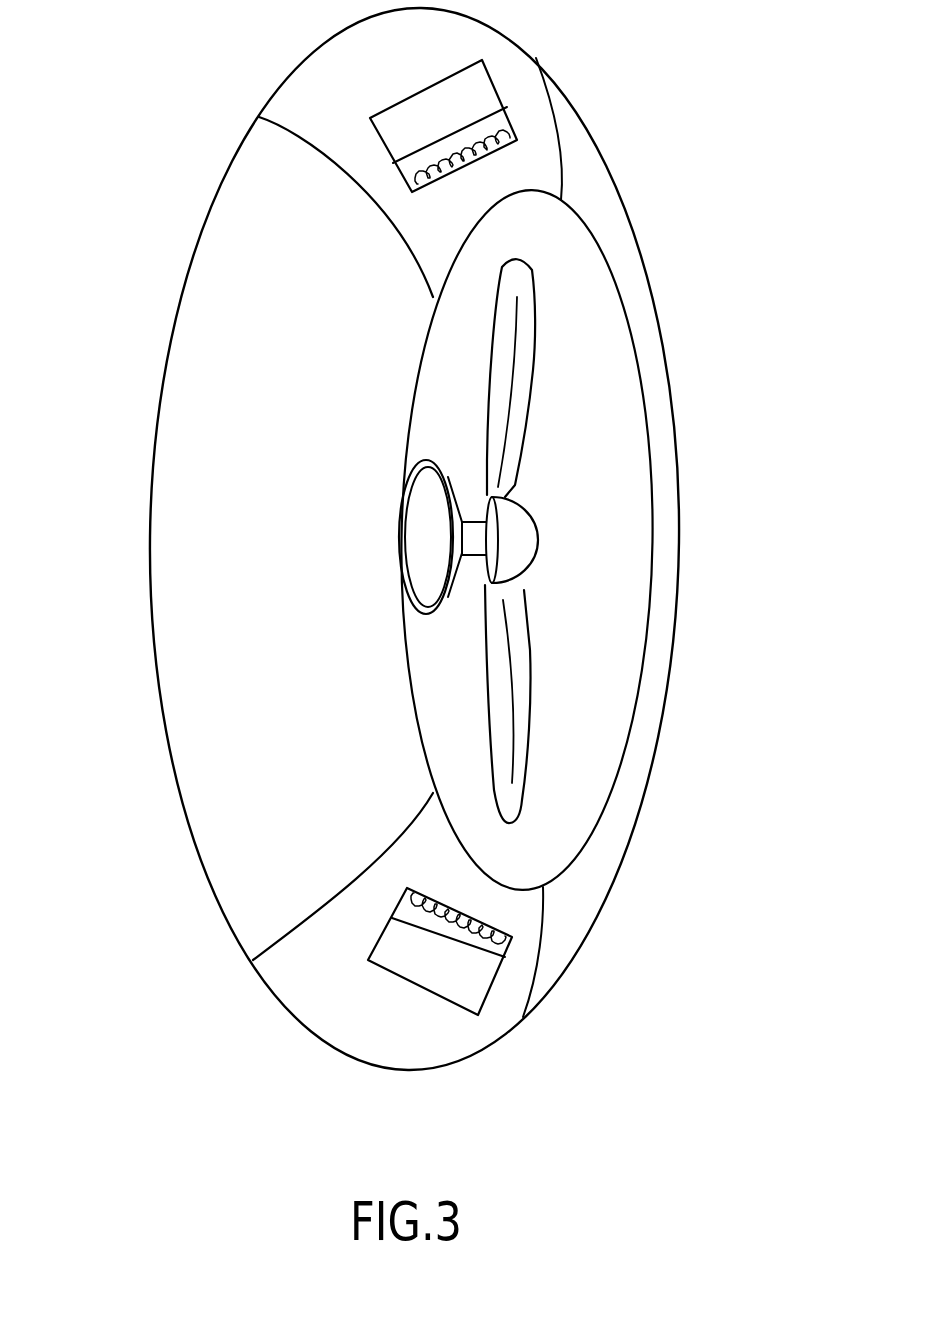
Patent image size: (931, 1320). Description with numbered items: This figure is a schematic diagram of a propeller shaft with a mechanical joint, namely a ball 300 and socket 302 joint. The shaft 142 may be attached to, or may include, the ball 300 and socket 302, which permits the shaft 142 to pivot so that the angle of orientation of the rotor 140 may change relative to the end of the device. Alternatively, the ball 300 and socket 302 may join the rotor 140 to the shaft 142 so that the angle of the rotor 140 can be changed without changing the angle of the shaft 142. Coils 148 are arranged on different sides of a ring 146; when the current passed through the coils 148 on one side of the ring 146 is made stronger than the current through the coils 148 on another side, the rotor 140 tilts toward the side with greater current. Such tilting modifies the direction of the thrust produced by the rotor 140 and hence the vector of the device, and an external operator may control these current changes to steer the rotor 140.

The rotor 140 is at (537, 382).
The shaft 142 is at (513, 495).
The ring 146 is at (643, 662).
The coils 148 is at (507, 120).
The ball 300 is at (428, 517).
The socket 302 is at (427, 467).